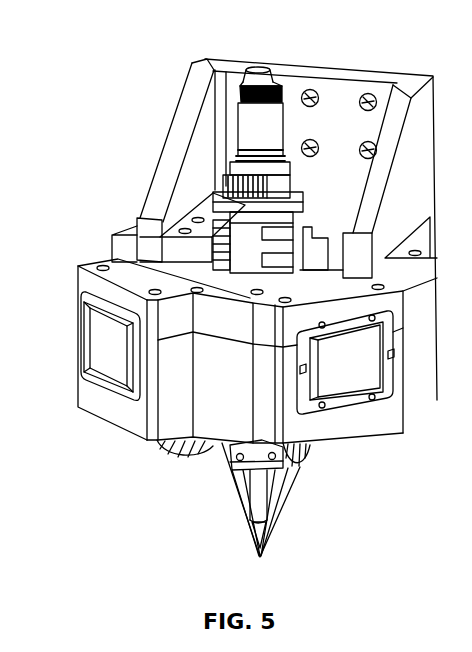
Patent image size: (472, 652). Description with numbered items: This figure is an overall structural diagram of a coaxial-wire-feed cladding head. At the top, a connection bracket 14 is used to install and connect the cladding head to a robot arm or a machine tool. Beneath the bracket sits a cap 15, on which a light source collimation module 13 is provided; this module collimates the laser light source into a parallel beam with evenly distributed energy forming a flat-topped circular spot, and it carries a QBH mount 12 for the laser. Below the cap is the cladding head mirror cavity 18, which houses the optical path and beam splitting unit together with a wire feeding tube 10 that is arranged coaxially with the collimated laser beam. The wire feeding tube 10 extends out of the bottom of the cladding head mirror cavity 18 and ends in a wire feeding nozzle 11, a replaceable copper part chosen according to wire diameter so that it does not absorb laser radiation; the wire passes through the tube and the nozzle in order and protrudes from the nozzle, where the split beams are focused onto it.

The wire feeding tube 10 is at (260, 508).
The wire feeding nozzle 11 is at (257, 530).
The QBH mount 12 is at (255, 121).
The light source collimation module 13 is at (242, 230).
The connection bracket 14 is at (200, 145).
The cap 15 is at (232, 318).
The cladding head mirror cavity 18 is at (228, 388).